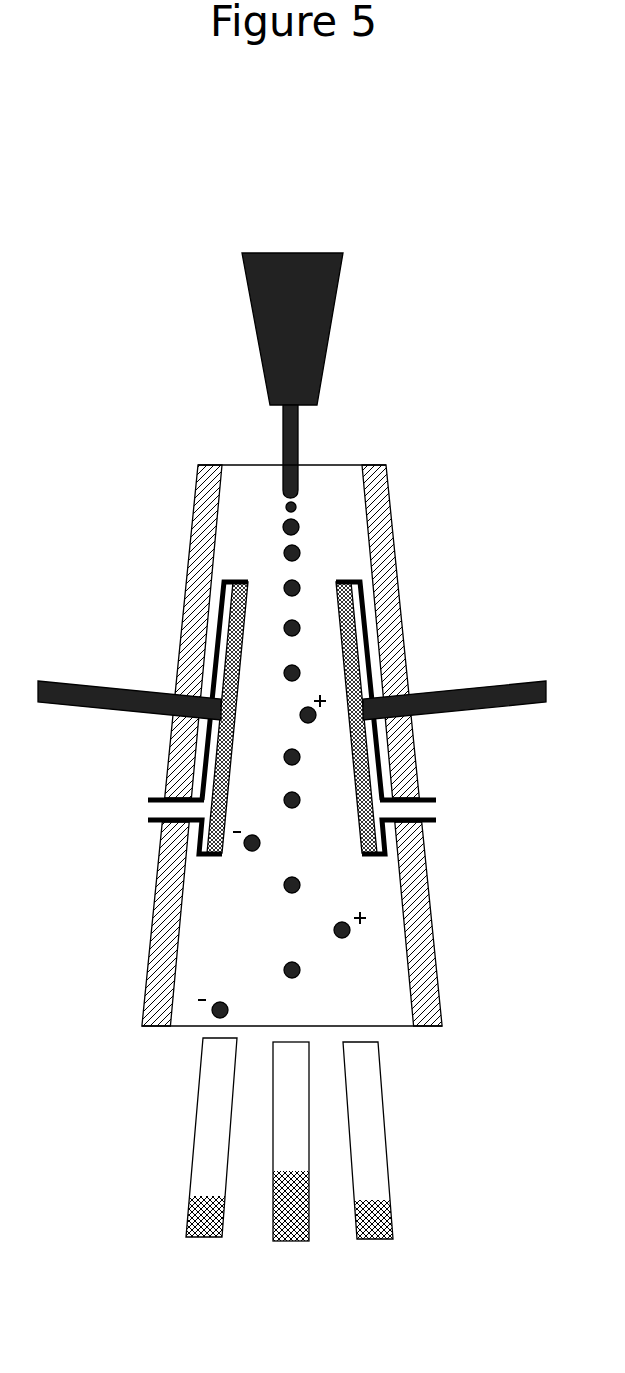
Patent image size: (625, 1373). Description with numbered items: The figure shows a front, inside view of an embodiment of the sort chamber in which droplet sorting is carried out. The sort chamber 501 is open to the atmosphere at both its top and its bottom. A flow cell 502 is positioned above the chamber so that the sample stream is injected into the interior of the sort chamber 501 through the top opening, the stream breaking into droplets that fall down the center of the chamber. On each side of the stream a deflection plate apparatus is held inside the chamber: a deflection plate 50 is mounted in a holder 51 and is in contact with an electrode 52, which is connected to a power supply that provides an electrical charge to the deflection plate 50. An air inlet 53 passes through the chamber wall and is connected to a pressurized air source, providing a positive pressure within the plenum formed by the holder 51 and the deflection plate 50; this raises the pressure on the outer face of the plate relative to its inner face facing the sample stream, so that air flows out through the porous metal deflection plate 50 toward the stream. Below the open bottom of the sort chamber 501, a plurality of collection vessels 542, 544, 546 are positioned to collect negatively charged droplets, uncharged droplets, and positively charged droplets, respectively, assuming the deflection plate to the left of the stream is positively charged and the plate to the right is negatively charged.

The flow cell 502 is at (344, 367).
The sort chamber 501 is at (418, 519).
The holder 51 is at (219, 571).
The deflection plate 50 is at (222, 661).
The electrode 52 is at (124, 719).
The air inlet 53 is at (136, 810).
The collection vessel 542 is at (191, 1136).
The collection vessel 544 is at (285, 1246).
The collection vessel 546 is at (392, 1139).